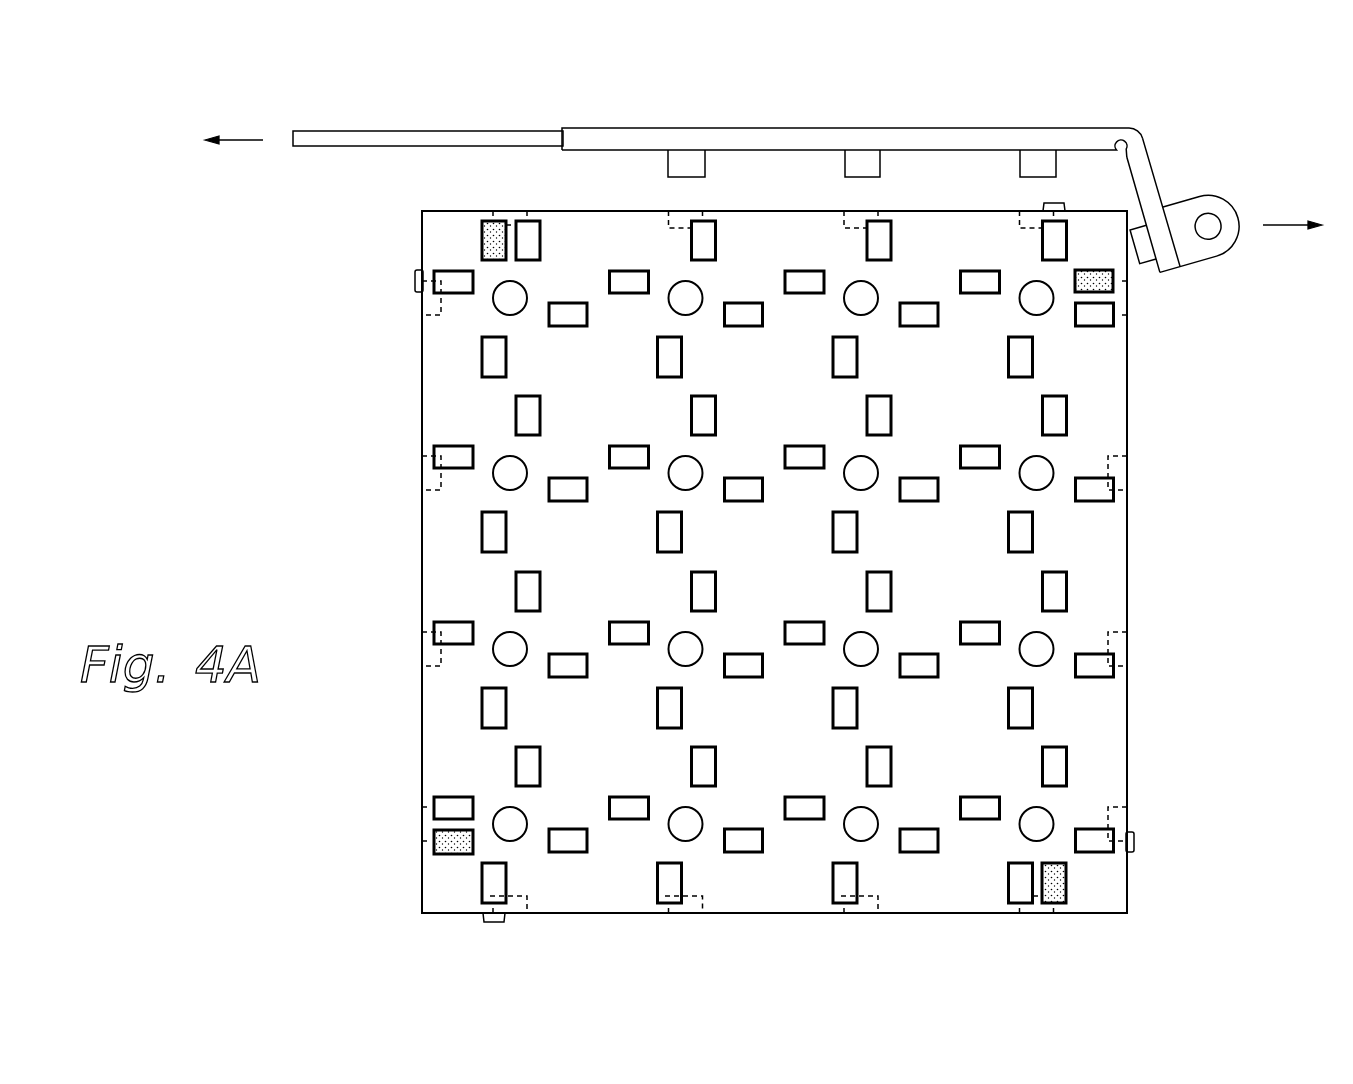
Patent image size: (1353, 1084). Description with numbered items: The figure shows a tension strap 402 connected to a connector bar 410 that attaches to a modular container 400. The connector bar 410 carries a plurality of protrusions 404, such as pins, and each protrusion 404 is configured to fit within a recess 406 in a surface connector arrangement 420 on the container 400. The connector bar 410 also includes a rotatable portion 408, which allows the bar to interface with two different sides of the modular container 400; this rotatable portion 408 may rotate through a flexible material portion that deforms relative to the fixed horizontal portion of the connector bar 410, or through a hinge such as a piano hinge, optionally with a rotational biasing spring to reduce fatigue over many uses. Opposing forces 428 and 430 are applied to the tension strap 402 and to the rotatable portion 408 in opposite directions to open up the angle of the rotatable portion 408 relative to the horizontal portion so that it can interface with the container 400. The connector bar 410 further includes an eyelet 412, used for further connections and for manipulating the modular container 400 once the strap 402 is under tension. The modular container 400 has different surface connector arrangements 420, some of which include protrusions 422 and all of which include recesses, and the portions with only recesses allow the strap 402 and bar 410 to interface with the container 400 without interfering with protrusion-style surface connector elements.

The modular container 400 is at (220, 350).
The tension strap 402 is at (441, 131).
The protrusions 404 is at (686, 160).
The recess 406 is at (505, 477).
The rotatable portion 408 is at (1157, 175).
The connector bar 410 is at (753, 128).
The eyelet 412 is at (1217, 255).
The surface connector arrangement 420 is at (423, 449).
The protrusion 422 is at (415, 278).
The force 428 is at (243, 135).
The force 430 is at (1280, 225).